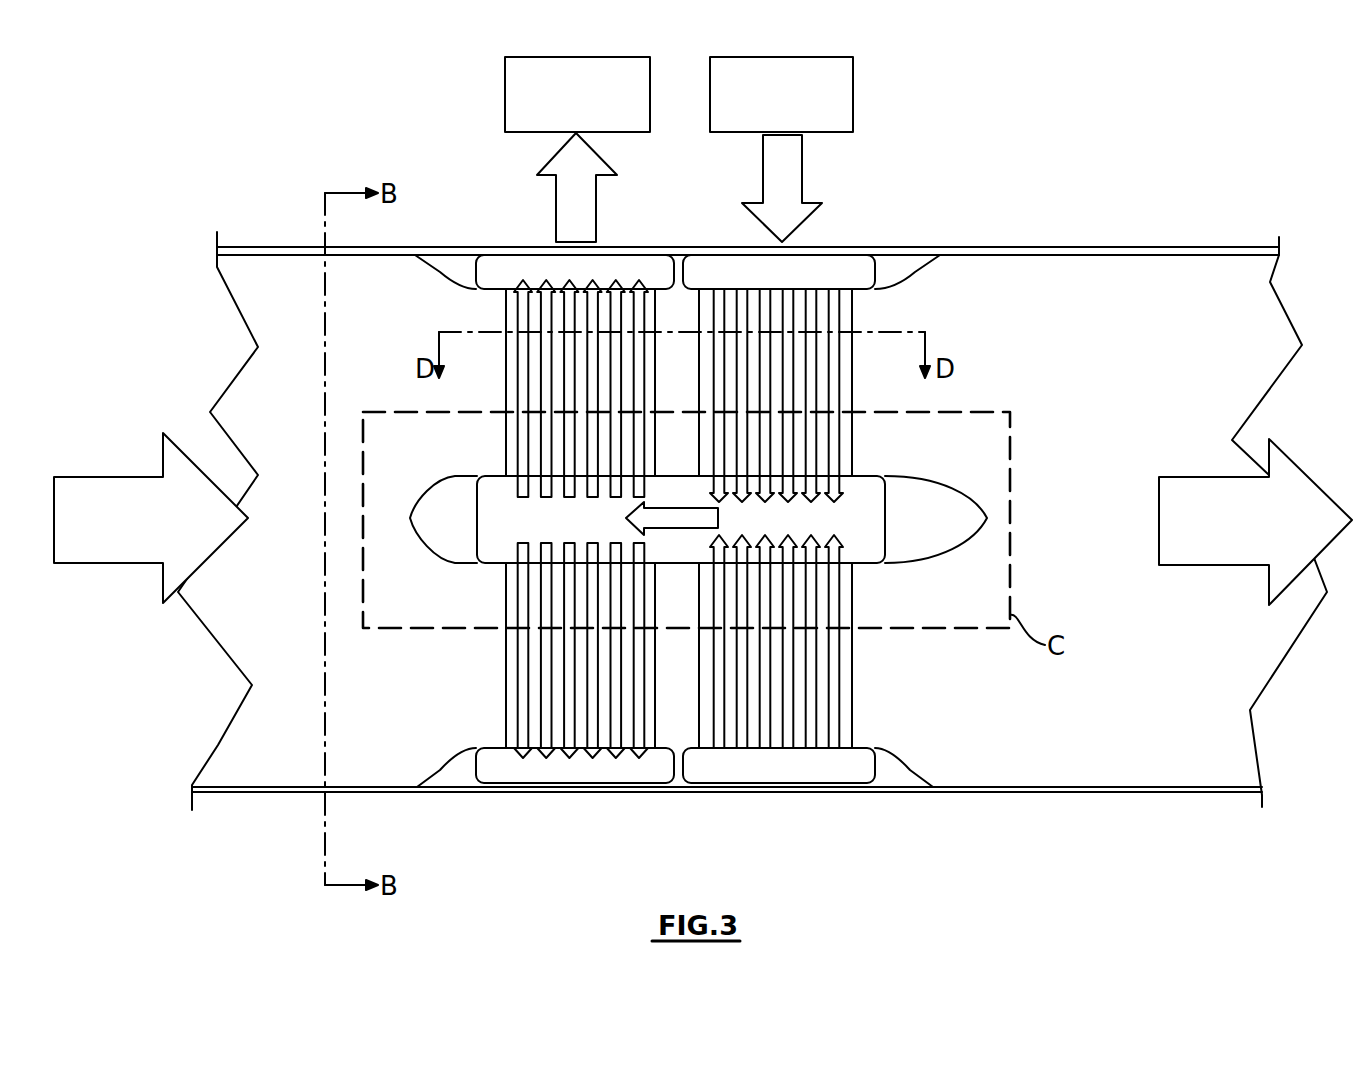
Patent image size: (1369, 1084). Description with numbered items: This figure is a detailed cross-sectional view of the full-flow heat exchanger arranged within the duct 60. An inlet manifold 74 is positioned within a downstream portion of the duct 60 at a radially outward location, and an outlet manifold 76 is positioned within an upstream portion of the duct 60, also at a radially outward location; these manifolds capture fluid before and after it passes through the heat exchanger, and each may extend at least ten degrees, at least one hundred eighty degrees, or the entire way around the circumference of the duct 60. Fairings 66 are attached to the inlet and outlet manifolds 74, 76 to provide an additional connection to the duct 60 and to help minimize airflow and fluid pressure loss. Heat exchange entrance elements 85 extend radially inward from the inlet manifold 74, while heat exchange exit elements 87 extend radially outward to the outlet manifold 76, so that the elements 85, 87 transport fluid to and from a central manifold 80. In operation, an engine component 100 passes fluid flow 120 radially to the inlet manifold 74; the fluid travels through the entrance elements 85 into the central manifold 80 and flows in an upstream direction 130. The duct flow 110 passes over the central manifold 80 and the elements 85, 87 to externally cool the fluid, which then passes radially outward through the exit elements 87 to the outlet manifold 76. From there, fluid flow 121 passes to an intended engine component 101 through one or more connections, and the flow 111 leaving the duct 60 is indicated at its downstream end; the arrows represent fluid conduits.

The duct 60 is at (305, 247).
The fairings 66 is at (424, 274).
The inlet manifold 74 is at (738, 267).
The outlet manifold 76 is at (618, 267).
The central manifold 80 is at (420, 560).
The heat exchange entrance elements 85 is at (837, 693).
The heat exchange exit elements 87 is at (518, 670).
The engine component 100 is at (853, 90).
The intended engine component 101 is at (505, 90).
The duct flow 110 is at (108, 477).
The outlet airflow 111 is at (1310, 472).
The fluid flow 120 is at (803, 168).
The fluid flow 121 is at (542, 170).
The upstream direction 130 is at (718, 514).